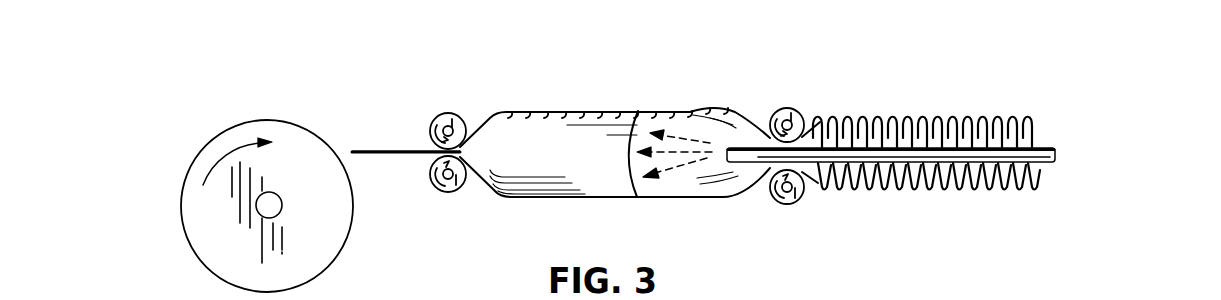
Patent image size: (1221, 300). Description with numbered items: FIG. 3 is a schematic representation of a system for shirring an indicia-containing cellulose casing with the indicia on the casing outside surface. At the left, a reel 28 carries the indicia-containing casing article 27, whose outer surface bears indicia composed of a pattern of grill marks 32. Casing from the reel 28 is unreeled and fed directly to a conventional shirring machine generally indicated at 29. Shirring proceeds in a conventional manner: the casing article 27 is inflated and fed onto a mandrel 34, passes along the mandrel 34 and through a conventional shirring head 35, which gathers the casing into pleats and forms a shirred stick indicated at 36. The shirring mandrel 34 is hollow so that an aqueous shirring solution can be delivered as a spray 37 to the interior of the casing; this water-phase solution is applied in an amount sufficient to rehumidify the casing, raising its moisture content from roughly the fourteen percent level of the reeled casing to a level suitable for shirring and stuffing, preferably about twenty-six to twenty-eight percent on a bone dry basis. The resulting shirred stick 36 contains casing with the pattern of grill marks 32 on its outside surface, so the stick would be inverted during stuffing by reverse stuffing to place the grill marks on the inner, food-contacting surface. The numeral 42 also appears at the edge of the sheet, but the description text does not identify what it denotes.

The indicia-containing casing article 27 is at (376, 158).
The reel 28 is at (347, 243).
The shirring machine 29 is at (851, 78).
The pattern of grill marks 32 is at (350, 150).
The mandrel 34 is at (1043, 147).
The shirring head 35 is at (780, 107).
The shirred stick 36 is at (912, 115).
The spray 37 is at (683, 167).
The pleated tubing 42 is at (1104, 299).